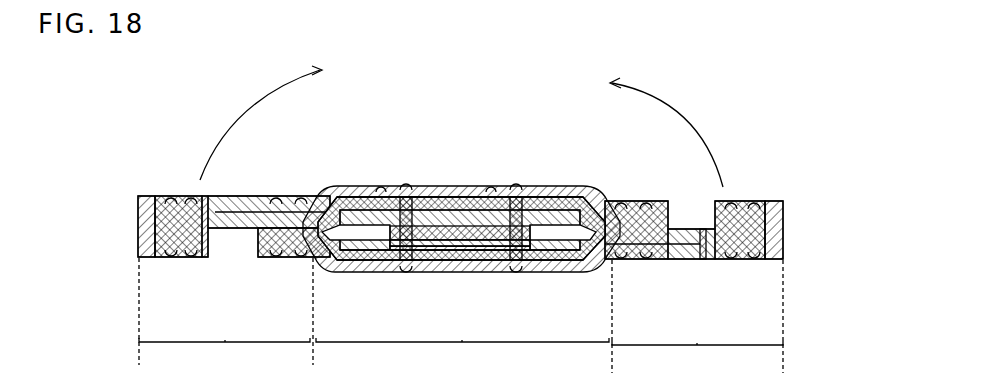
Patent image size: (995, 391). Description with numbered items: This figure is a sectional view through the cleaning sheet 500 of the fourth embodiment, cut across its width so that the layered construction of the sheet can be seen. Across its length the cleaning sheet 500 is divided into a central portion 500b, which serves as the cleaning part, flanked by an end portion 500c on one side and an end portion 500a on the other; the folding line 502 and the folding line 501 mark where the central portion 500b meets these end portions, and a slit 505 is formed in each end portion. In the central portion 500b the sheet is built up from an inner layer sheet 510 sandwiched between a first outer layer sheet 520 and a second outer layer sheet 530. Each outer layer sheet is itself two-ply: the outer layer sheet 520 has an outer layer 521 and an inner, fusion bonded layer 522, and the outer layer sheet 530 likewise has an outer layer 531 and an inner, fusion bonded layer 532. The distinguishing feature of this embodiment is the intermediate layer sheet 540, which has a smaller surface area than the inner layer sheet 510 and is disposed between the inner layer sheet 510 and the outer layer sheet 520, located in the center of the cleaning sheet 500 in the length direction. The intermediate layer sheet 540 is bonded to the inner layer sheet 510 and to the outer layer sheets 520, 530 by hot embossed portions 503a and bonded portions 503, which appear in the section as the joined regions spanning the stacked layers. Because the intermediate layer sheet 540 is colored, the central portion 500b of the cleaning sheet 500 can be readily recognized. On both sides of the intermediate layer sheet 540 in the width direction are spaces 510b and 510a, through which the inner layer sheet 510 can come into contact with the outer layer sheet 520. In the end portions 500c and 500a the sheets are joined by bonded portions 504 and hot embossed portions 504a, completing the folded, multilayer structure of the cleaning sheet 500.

The cleaning sheet 500 is at (376, 86).
The folding line 501 is at (587, 272).
The folding line 502 is at (337, 186).
The bonded portion 503 is at (405, 186).
The hot embossed portion 503a is at (383, 186).
The bonded portion 504 is at (276, 196).
The hot embossed portion 504a is at (250, 196).
The slit 505 is at (217, 196).
The inner layer sheet 510 is at (438, 187).
The space 510a is at (553, 272).
The space 510b is at (353, 272).
The outer layer sheet 520 is at (454, 277).
The outer layer 521 is at (430, 272).
The inner layer 522 is at (386, 272).
The outer layer sheet 530 is at (467, 180).
The outer layer 531 is at (545, 186).
The inner layer 532 is at (567, 186).
The intermediate layer sheet 540 is at (493, 272).
The end portion 500a is at (697, 319).
The central portion 500b is at (462, 356).
The end portion 500c is at (226, 316).